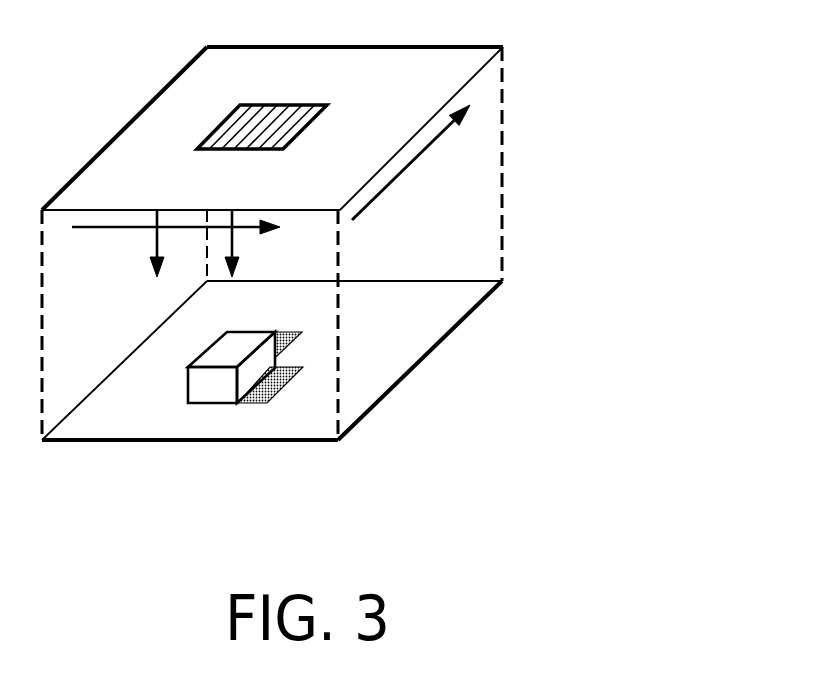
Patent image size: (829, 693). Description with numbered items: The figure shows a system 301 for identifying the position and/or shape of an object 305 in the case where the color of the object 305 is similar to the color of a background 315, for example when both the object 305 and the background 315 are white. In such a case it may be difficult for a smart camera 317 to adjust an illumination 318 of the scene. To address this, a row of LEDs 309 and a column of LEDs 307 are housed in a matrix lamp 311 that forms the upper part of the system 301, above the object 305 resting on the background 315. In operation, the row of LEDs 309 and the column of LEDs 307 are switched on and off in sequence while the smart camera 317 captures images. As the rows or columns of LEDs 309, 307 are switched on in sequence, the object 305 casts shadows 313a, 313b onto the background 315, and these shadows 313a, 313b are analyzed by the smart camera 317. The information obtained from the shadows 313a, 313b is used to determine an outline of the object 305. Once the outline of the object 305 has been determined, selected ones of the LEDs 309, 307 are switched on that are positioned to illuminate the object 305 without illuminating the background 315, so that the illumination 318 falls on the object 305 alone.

The system 301 is at (475, 312).
The object 305 is at (205, 405).
The column of LEDs 307 is at (412, 163).
The row of LEDs 309 is at (145, 227).
The matrix lamp 311 is at (147, 127).
The shadow 313a is at (280, 353).
The shadow 313b is at (277, 395).
The background 315 is at (218, 430).
The smart camera 317 is at (303, 130).
The illumination 318 is at (148, 252).